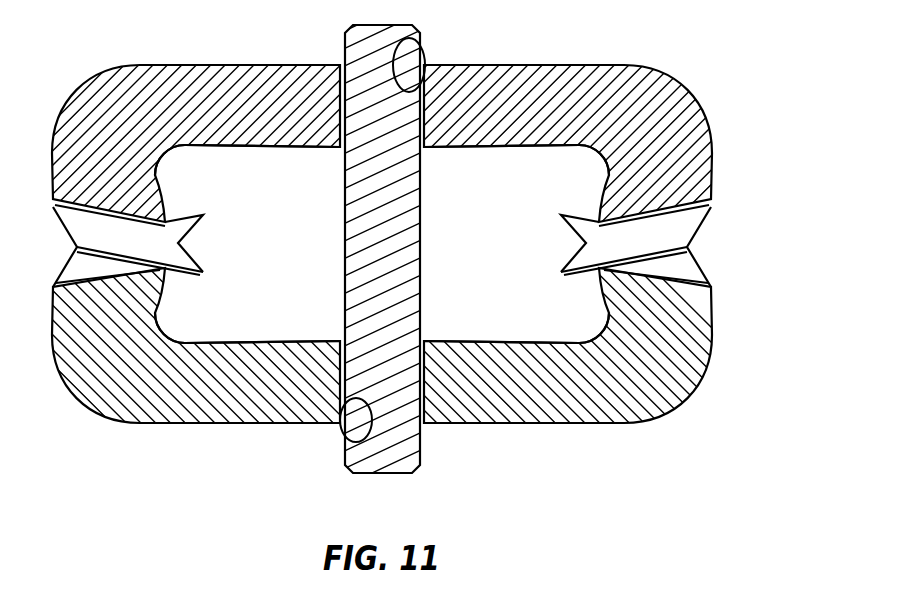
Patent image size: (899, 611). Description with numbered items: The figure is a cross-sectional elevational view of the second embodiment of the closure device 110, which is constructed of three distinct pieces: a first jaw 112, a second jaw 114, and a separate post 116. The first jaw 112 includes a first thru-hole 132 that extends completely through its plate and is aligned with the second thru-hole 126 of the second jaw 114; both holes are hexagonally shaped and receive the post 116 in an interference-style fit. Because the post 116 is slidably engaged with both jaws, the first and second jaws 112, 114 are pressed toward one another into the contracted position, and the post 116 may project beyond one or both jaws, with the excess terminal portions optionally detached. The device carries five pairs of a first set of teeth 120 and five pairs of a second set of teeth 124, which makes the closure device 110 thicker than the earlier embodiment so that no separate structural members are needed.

The closure device 110 is at (694, 49).
The first jaw 112 is at (468, 341).
The second jaw 114 is at (557, 64).
The post 116 is at (419, 198).
The first set of teeth 120 is at (186, 228).
The second set of teeth 124 is at (677, 227).
The second thru-hole 126 is at (398, 52).
The first thru-hole 132 is at (350, 441).